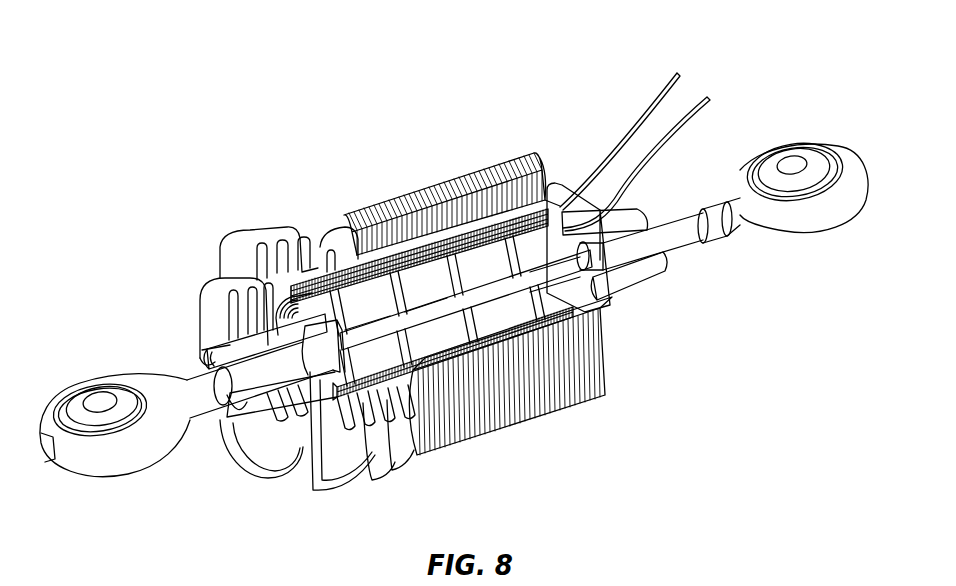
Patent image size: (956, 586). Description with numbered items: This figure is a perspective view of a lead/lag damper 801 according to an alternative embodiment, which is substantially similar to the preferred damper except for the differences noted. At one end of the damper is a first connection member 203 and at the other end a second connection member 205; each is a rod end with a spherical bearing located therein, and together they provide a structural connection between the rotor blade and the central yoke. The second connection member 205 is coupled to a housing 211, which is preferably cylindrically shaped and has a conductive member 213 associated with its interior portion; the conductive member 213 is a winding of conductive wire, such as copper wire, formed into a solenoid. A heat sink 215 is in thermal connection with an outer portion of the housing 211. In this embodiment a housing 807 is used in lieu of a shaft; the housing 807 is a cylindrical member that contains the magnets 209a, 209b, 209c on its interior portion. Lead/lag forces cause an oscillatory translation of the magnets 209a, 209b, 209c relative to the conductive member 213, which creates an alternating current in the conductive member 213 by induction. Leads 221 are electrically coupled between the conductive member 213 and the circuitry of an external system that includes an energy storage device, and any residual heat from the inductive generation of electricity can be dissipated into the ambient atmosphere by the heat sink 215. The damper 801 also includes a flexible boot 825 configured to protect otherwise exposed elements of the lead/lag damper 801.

The lead/lag damper 801 is at (201, 158).
The first connection member 203 is at (122, 472).
The second connection member 205 is at (790, 238).
The magnet 209a is at (350, 300).
The magnet 209b is at (418, 286).
The magnet 209c is at (475, 270).
The housing 211 is at (630, 278).
The conductive member 213 is at (463, 237).
The heat sink 215 is at (521, 177).
The leads 221 is at (675, 76).
The flexible boot 825 is at (217, 301).
The housing 807 is at (325, 470).